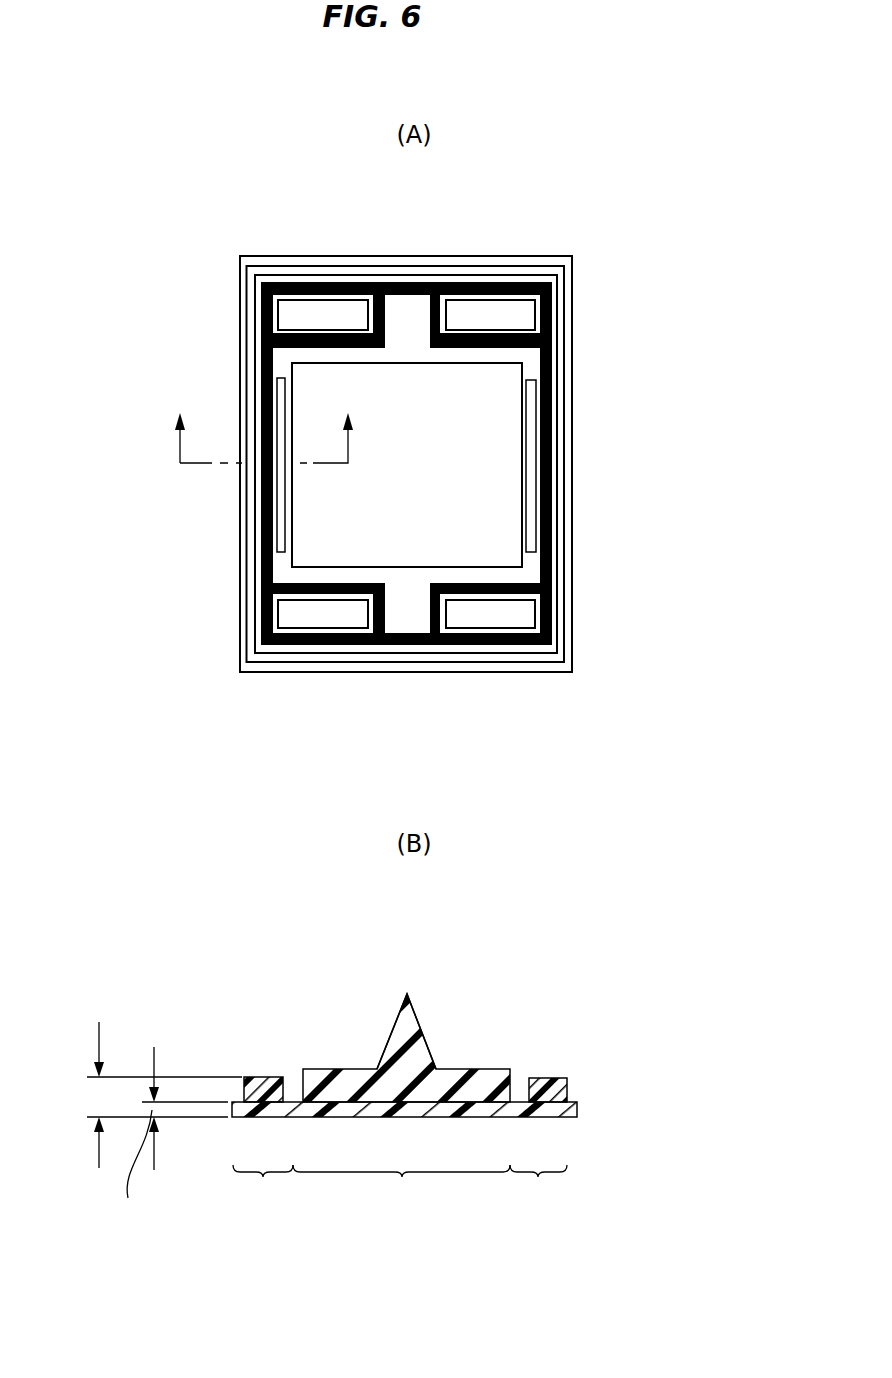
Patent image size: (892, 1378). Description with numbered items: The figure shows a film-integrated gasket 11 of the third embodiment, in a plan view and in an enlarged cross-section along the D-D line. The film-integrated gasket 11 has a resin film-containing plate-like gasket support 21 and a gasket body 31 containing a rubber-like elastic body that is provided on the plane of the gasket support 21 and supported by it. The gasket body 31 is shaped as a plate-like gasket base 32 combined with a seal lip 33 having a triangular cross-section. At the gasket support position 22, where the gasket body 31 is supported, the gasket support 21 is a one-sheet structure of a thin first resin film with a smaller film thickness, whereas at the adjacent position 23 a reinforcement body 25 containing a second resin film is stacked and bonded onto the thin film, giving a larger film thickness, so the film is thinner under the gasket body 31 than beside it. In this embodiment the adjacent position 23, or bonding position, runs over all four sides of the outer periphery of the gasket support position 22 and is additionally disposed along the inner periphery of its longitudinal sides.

The film-integrated gasket 11 is at (230, 272).
The gasket support 21 is at (576, 1112).
The gasket support position 22 is at (401, 1191).
The adjacent position 23 is at (400, 1191).
The reinforcement body 25 is at (552, 488).
The gasket body 31 is at (645, 352).
The gasket base 32 is at (332, 1070).
The seal lip 33 is at (405, 994).